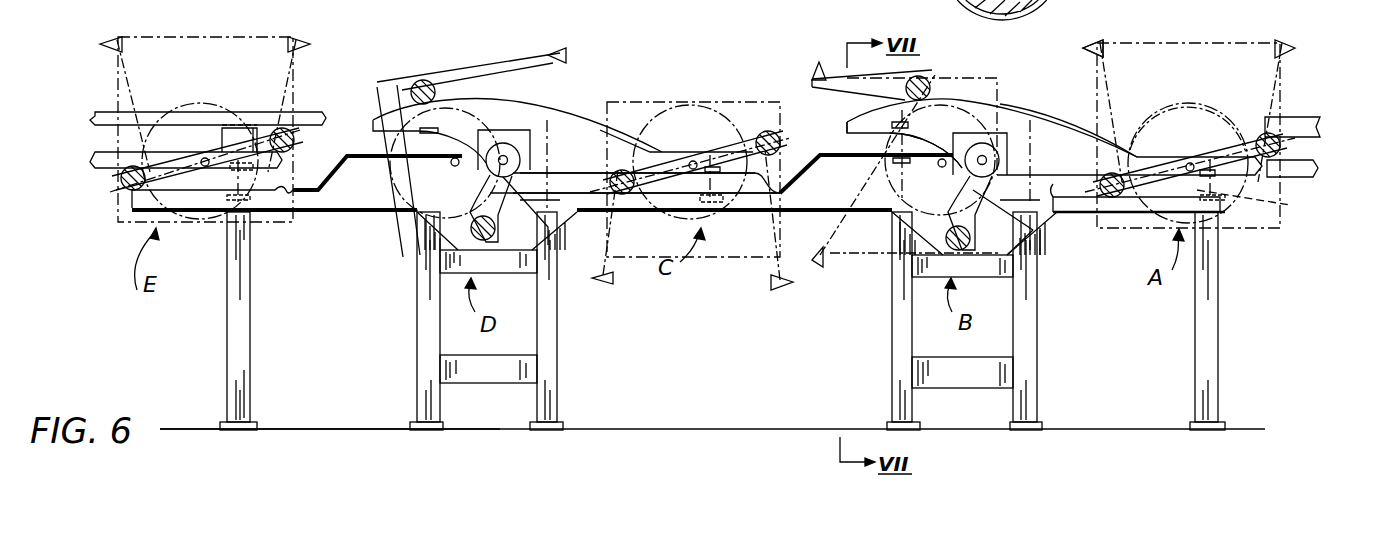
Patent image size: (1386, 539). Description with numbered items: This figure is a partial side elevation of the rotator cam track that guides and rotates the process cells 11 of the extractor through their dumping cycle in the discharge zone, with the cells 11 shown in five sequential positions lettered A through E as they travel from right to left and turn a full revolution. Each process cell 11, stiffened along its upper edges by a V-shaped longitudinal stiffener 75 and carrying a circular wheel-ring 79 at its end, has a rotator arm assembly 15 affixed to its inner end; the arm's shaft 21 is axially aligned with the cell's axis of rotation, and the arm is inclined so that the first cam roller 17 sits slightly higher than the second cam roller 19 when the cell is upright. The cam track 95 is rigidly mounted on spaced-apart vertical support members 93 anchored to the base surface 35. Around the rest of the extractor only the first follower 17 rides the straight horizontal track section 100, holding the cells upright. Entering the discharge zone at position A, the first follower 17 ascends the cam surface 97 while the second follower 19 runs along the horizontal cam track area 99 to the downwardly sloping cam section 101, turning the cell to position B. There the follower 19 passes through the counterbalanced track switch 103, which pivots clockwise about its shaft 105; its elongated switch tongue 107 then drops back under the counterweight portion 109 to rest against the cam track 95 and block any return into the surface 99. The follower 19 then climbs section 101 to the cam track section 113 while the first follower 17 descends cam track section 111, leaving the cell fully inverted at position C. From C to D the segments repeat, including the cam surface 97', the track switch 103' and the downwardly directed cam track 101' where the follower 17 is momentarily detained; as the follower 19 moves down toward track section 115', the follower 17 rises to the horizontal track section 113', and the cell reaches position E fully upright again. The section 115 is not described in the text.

The process cell 11 is at (138, 75).
The rotator arm assembly 15 is at (1200, 108).
The first cam roller 17 is at (290, 128).
The second cam roller 19 is at (125, 183).
The shaft 21 is at (1292, 208).
The base surface 35 is at (330, 428).
The longitudinal stiffener 75 is at (1086, 47).
The wheel-ring 79 is at (222, 95).
The vertical support member 93 is at (228, 336).
The cam track 95 is at (565, 98).
The cam surface 97 is at (1054, 120).
The cam surface 97' is at (615, 127).
The cam track area 99 is at (1058, 195).
The straight track section 100 is at (90, 135).
The downwardly sloping cam section 101 is at (818, 232).
The downwardly directed cam track 101' is at (512, 231).
The track switch 103 is at (1032, 240).
The track switch 103' is at (572, 249).
The shaft 105 is at (1018, 118).
The switch tongue 107 is at (1030, 268).
The counterweight portion 109 is at (884, 186).
The cam track section 111 is at (857, 108).
The cam track section 113 is at (866, 149).
The horizontal track section 113' is at (377, 157).
The slide bar 115 is at (646, 215).
The track section 115' is at (234, 207).